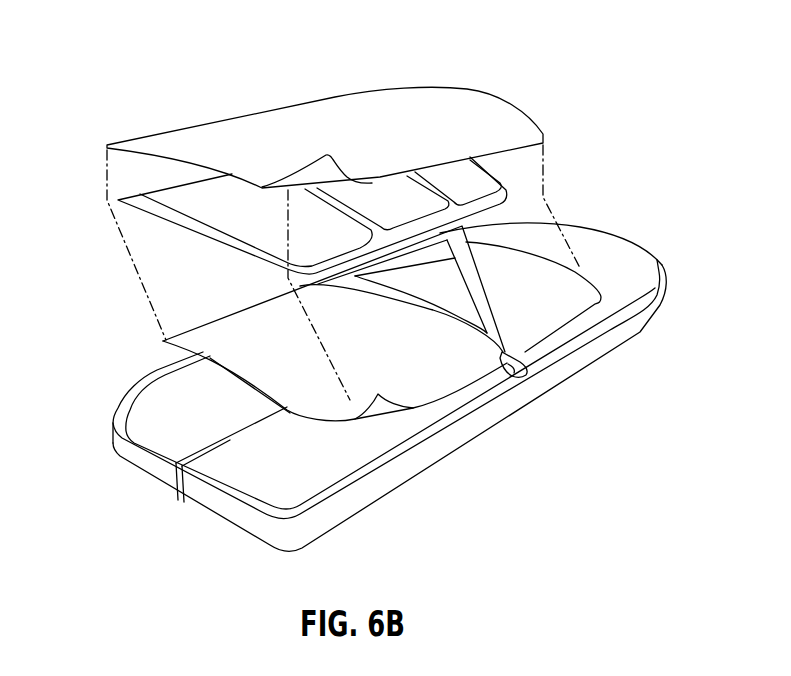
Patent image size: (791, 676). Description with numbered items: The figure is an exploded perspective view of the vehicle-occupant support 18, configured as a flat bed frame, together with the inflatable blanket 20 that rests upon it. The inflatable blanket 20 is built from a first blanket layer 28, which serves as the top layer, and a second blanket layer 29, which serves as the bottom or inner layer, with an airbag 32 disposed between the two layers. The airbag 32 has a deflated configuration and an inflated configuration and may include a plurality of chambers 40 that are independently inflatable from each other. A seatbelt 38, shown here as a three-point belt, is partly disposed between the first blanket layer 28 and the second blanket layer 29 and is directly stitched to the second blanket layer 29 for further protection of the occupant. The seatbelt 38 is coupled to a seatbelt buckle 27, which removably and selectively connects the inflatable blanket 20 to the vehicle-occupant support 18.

The inflatable blanket 20 is at (116, 64).
The first blanket layer 28 is at (140, 138).
The airbag 32 is at (236, 251).
The chambers 40 is at (382, 203).
The seatbelt 38 is at (462, 247).
The second blanket layer 29 is at (545, 265).
The seatbelt buckle 27 is at (530, 368).
The vehicle-occupant support 18 is at (618, 334).